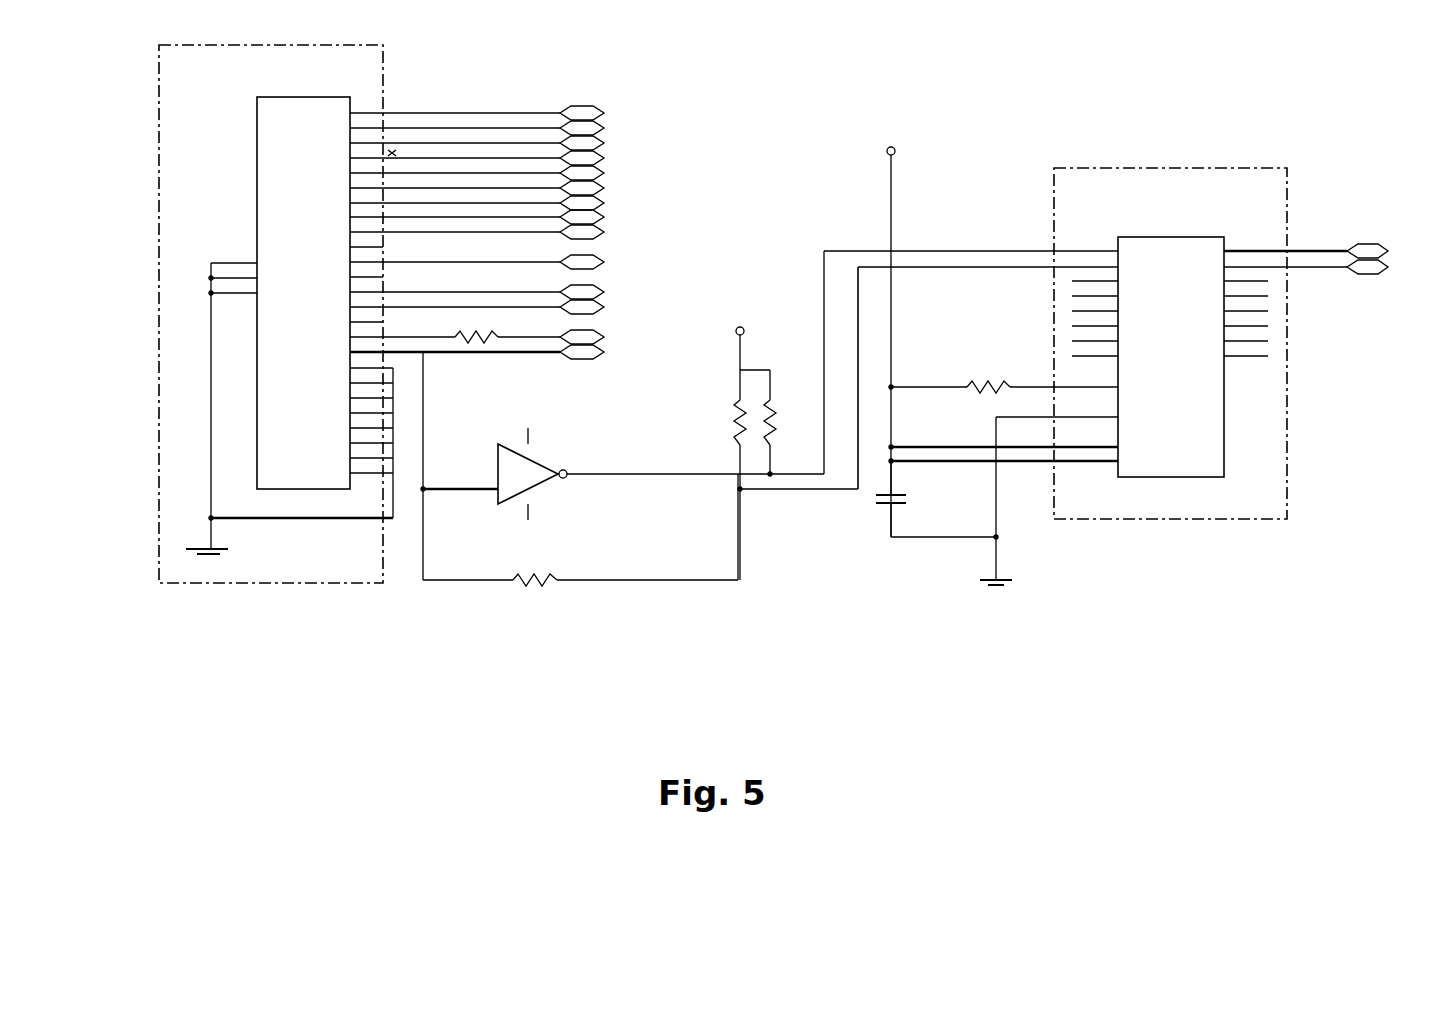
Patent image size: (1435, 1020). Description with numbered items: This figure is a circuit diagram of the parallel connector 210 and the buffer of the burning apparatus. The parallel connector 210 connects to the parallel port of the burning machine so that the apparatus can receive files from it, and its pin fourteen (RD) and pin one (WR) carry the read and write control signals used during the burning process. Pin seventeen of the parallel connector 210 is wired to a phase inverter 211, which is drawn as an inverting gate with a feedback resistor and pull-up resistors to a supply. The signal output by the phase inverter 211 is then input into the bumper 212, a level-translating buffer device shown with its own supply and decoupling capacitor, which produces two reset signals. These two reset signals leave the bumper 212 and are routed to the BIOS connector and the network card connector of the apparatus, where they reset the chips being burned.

The parallel connector 210 is at (158, 510).
The phase inverter 211 is at (518, 480).
The bumper 212 is at (1098, 168).